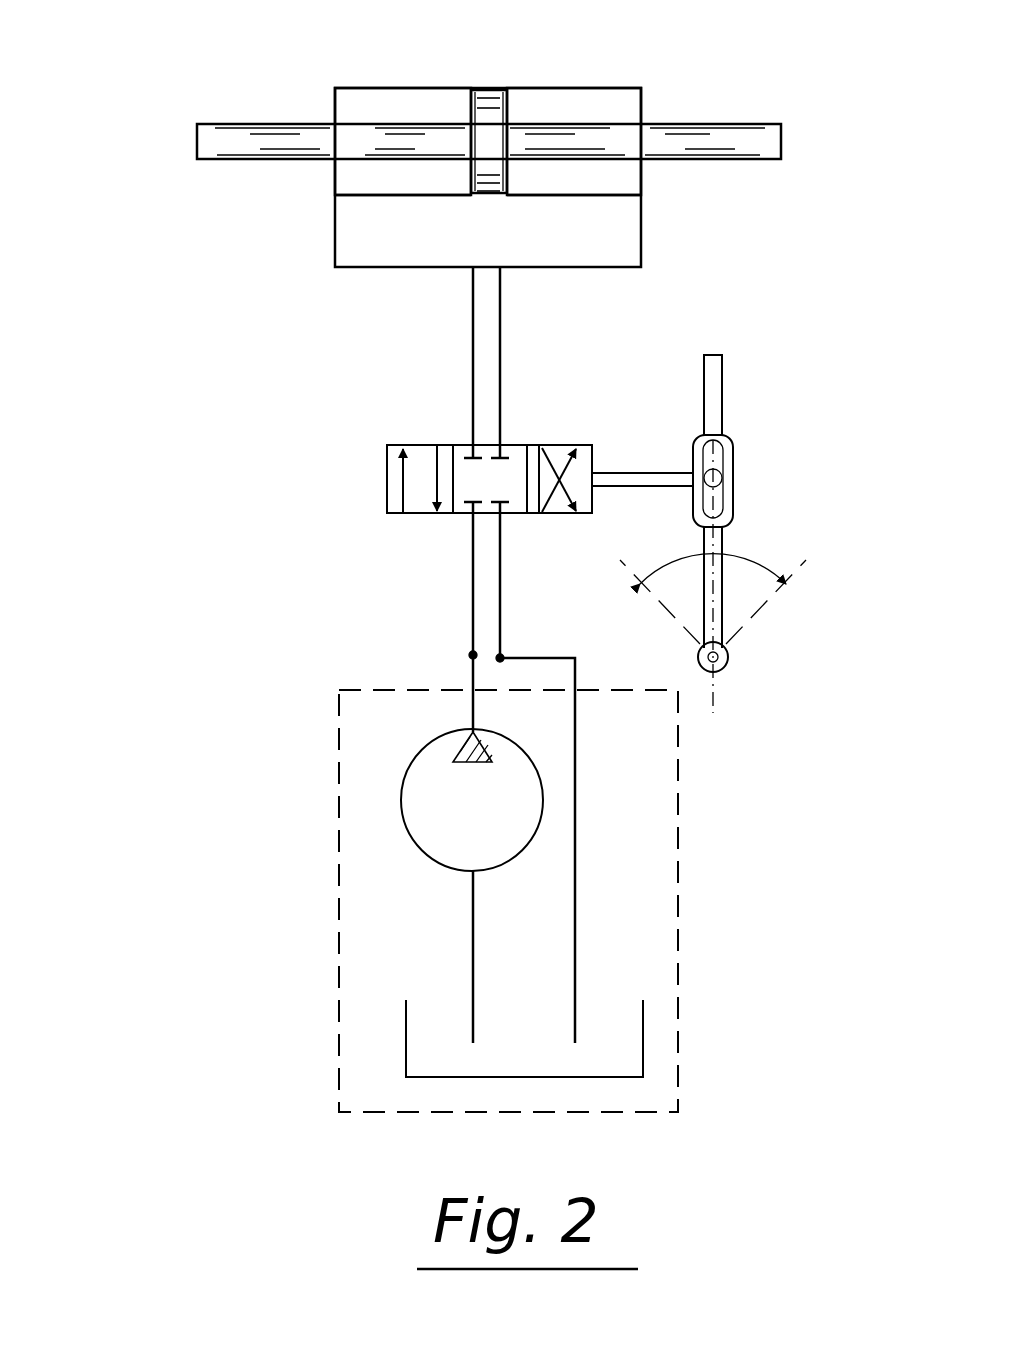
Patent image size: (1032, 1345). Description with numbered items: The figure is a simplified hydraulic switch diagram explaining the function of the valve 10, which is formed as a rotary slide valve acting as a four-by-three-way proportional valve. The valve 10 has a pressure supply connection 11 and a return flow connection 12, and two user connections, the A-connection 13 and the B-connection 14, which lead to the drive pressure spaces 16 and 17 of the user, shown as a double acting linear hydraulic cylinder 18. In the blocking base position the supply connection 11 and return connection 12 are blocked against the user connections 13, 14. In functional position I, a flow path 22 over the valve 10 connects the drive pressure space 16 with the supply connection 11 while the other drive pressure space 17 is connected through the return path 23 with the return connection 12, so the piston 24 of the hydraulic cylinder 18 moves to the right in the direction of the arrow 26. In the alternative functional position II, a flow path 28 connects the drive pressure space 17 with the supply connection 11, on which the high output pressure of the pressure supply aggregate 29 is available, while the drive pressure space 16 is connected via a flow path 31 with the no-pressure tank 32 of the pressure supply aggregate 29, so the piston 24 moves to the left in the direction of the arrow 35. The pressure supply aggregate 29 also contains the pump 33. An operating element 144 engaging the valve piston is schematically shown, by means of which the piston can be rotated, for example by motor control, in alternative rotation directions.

The valve 10 is at (386, 462).
The P-supply connection 11 is at (472, 515).
The T-connection 12 is at (500, 515).
The A-connection 13 is at (472, 445).
The B-connection 14 is at (500, 445).
The drive pressure space 16 is at (372, 98).
The drive pressure space 17 is at (562, 95).
The hydraulic cylinder 18 is at (630, 86).
The flow path 22 is at (403, 480).
The return flow path in first switching position 23 is at (434, 478).
The piston 24 is at (484, 95).
The arrow 26 is at (815, 142).
The flow path 28 is at (541, 505).
The pressure supply aggregate 29 is at (392, 725).
The flow path 31 is at (580, 470).
The tank 32 is at (420, 1037).
The pump 33 is at (435, 845).
The arrow 35 is at (162, 141).
The operating element 144 is at (652, 477).